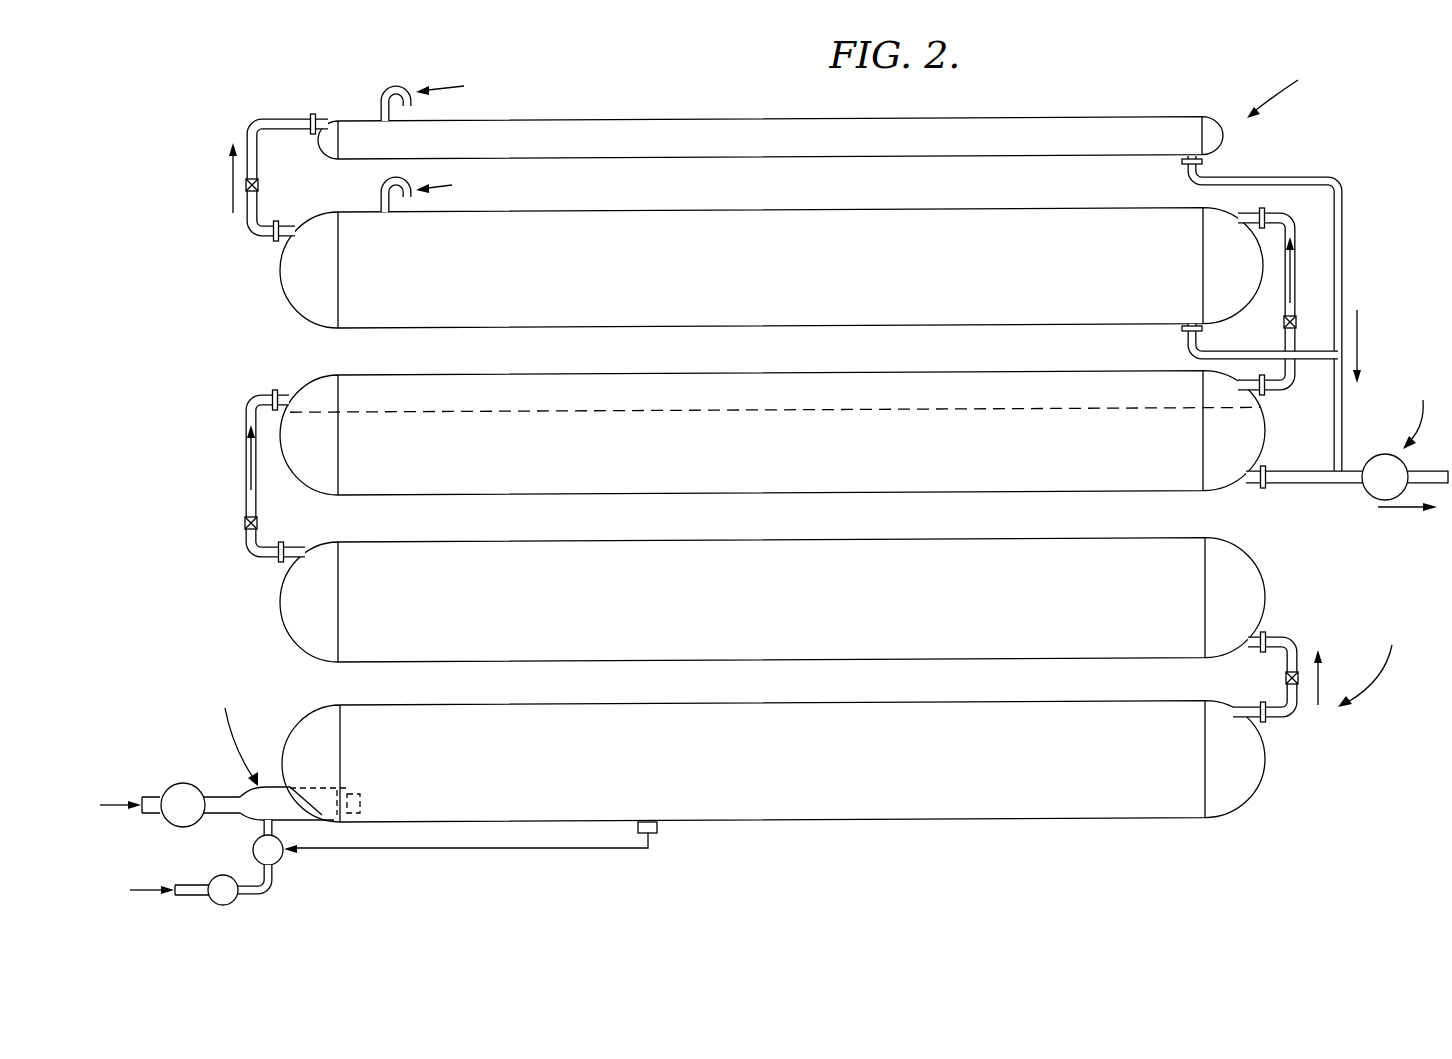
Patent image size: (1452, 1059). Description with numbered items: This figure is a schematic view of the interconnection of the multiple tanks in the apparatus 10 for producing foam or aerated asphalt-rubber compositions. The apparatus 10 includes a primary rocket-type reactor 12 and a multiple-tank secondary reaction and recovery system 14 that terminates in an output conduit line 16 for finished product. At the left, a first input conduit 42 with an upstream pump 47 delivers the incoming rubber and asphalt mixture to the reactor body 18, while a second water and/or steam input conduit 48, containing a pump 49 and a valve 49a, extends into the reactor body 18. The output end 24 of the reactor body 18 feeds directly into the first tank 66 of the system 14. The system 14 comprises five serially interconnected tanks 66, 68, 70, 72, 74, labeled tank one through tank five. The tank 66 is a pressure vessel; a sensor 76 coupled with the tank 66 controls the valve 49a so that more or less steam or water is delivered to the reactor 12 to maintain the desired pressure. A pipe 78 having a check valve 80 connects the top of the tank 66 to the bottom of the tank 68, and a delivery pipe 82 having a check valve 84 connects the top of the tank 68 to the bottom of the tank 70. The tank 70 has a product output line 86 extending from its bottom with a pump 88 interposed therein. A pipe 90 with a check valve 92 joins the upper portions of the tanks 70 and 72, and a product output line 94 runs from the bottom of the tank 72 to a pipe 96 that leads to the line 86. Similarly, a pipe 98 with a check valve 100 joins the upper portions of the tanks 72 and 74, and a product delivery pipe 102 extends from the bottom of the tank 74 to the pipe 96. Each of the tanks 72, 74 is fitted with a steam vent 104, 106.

The apparatus 10 is at (1290, 87).
The primary rocket-type reactor 12 is at (231, 733).
The multiple-tank secondary reaction and recovery system 14 is at (1373, 661).
The output conduit line 16 is at (1422, 410).
The reactor body 18 is at (277, 793).
The output end 24 is at (352, 790).
The first input conduit 42 is at (219, 815).
The upstream pump 47 is at (150, 812).
The second water and/or steam input conduit 48 is at (188, 895).
The pump 49 is at (240, 896).
The valve 49a is at (280, 858).
The tank 66 is at (904, 808).
The tank 68 is at (796, 653).
The tank 70 is at (806, 478).
The tank 72 is at (775, 321).
The tank 74 is at (861, 147).
The sensor 76 is at (655, 830).
The pipe 78 is at (1287, 705).
The check valve 80 is at (1284, 678).
The delivery pipe 82 is at (243, 480).
The check valve 84 is at (262, 524).
The product output line 86 is at (1295, 484).
The pump 88 is at (1372, 490).
The pipe 90 is at (1292, 378).
The check valve 92 is at (1300, 324).
The product output line 94 is at (1198, 359).
The pipe 96 is at (1344, 410).
The pipe 98 is at (246, 236).
The check valve 100 is at (258, 183).
The product delivery pipe 102 is at (1288, 178).
The steam vent 104 is at (381, 191).
The steam vent 106 is at (380, 101).